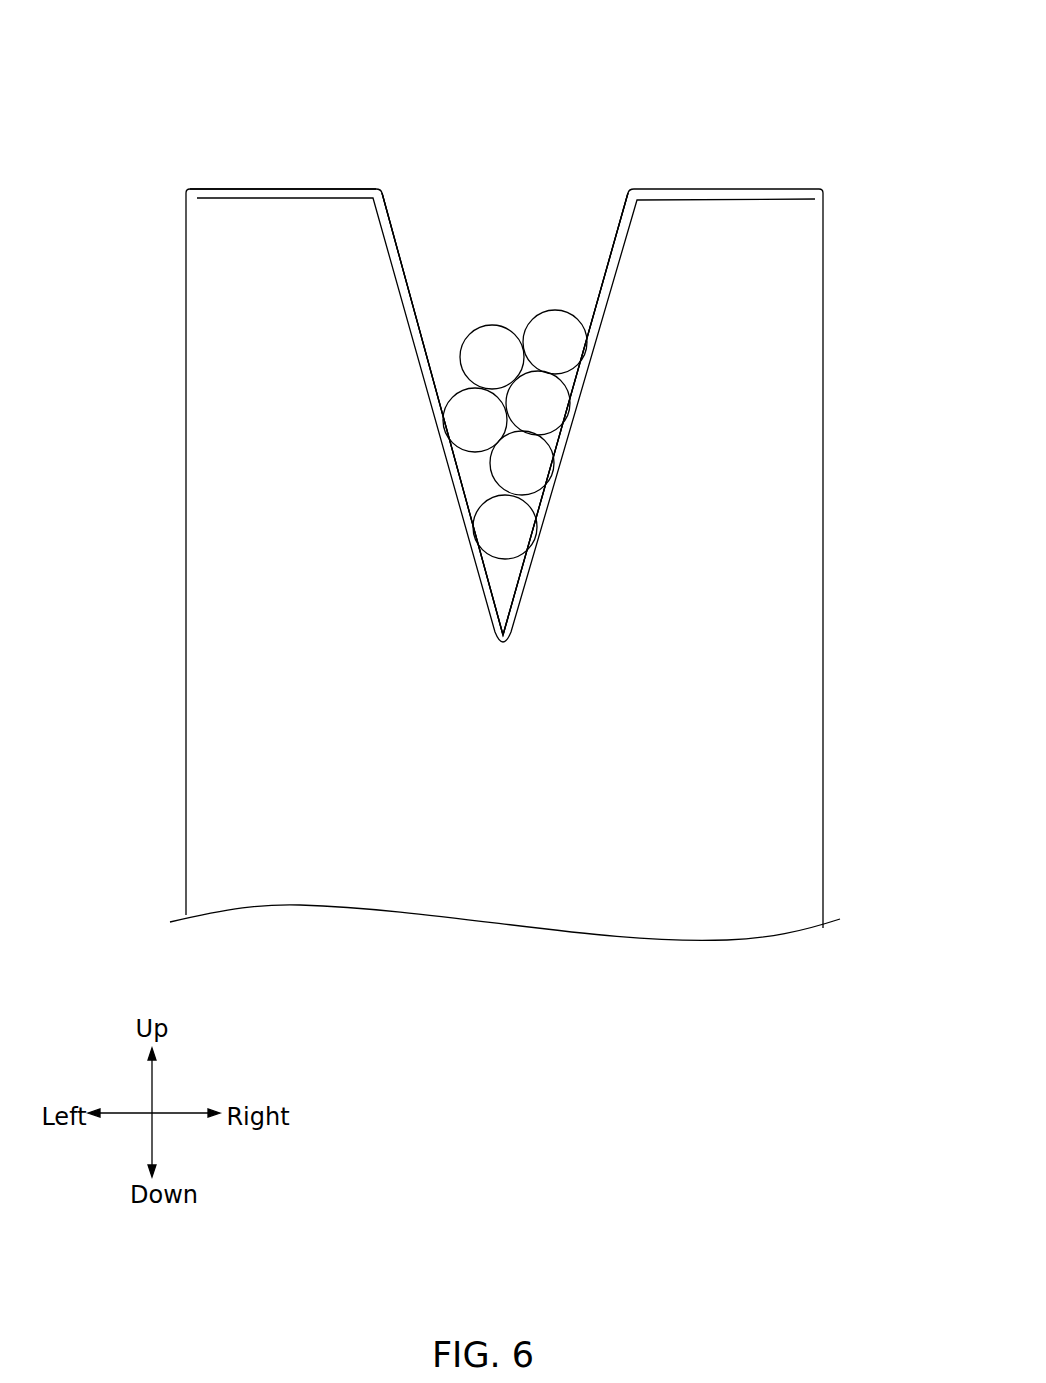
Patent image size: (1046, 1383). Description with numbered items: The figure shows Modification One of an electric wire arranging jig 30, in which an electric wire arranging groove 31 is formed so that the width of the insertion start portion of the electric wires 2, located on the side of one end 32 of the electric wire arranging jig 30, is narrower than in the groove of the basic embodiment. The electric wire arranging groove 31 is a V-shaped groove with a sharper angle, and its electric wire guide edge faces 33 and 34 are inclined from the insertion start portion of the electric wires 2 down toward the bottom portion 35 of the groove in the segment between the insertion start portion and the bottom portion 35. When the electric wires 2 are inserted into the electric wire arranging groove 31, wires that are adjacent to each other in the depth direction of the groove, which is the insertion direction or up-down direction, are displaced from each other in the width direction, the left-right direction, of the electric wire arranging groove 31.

The electric wire arranging jig 30 is at (797, 113).
The electric wire arranging groove 31 is at (488, 295).
The one end 32 is at (213, 188).
The electric wire guide edge face 33 is at (605, 278).
The electric wire guide edge face 34 is at (413, 309).
The bottom portion 35 is at (518, 605).
The electric wire 2 is at (553, 308).